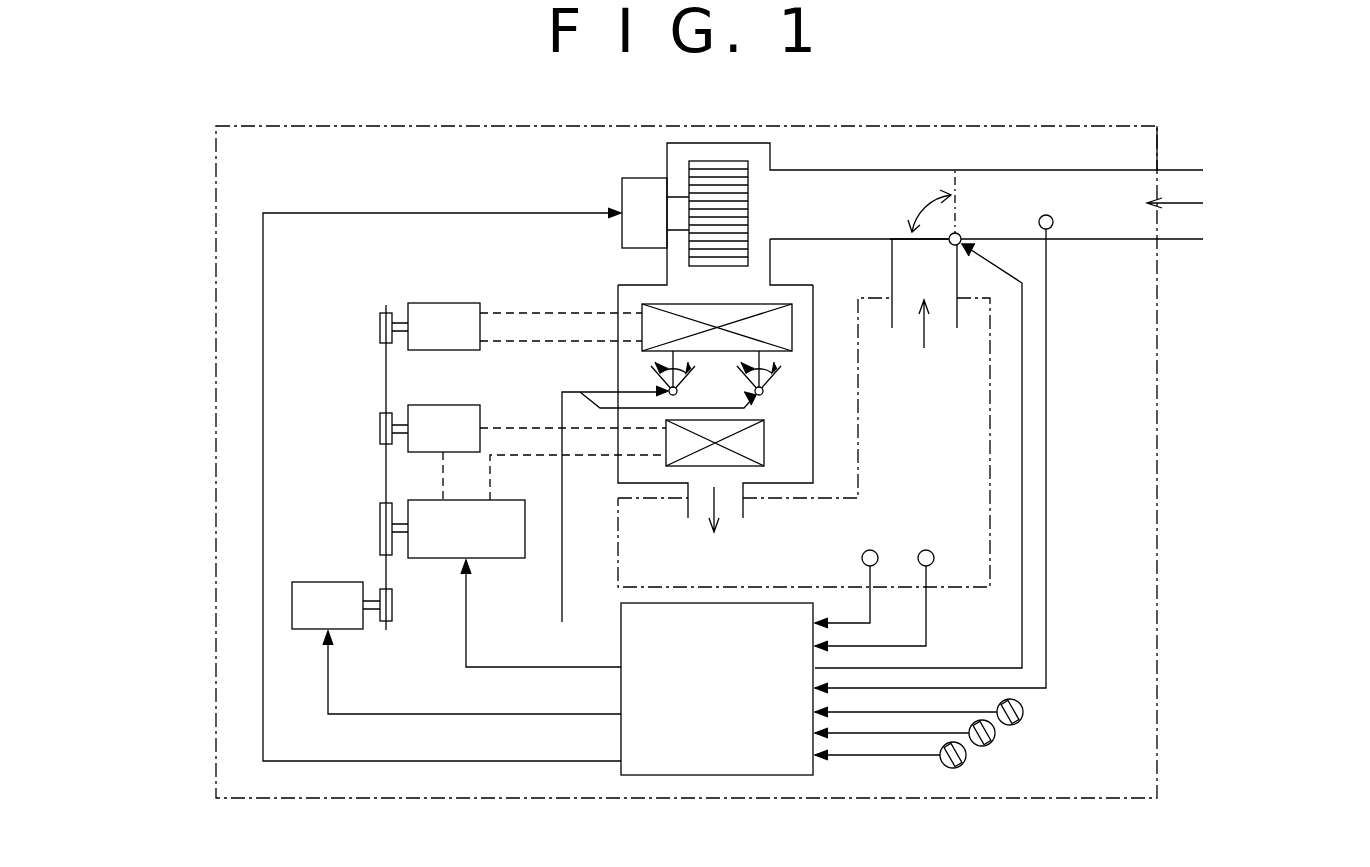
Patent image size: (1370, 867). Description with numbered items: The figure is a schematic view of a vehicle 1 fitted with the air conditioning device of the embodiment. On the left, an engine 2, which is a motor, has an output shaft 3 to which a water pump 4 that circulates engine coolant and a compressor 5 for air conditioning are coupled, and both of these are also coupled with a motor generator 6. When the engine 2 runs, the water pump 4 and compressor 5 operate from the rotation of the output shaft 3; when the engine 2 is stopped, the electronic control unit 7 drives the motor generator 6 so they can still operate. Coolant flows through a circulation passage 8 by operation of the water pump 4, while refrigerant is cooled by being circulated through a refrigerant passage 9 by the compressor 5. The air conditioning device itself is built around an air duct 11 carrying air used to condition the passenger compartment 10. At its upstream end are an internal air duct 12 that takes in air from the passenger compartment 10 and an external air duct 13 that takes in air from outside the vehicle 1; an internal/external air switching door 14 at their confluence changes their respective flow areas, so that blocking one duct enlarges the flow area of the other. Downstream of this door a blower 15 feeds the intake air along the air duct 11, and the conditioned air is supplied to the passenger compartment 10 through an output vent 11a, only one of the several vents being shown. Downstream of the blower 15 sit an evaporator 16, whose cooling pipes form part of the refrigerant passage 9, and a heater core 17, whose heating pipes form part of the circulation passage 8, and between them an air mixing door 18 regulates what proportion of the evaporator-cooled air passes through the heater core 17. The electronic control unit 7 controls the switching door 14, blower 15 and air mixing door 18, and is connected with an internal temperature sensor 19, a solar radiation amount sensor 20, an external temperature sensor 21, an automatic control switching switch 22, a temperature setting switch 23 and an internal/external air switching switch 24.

The vehicle 1 is at (1157, 457).
The engine 2 is at (427, 558).
The output shaft 3 is at (393, 520).
The water pump 4 is at (430, 405).
The compressor 5 is at (425, 303).
The motor generator 6 is at (335, 582).
The electronic control unit 7 is at (620, 765).
The circulation passage 8 is at (520, 428).
The refrigerant passage 9 is at (516, 313).
The passenger compartment 10 is at (617, 517).
The air duct 11 is at (870, 170).
The output vent 11a is at (736, 518).
The internal air duct 12 is at (892, 300).
The external air duct 13 is at (1175, 240).
The internal/external air switching door 14 is at (918, 243).
The blower 15 is at (715, 161).
The evaporator 16 is at (660, 305).
The heater core 17 is at (765, 425).
The air mixing door 18 is at (655, 385).
The internal temperature sensor 19 is at (870, 550).
The solar radiation amount sensor 20 is at (926, 550).
The external temperature sensor 21 is at (1053, 220).
The automatic control switching switch 22 is at (1023, 712).
The temperature setting switch 23 is at (995, 735).
The internal/external air switching switch 24 is at (966, 760).